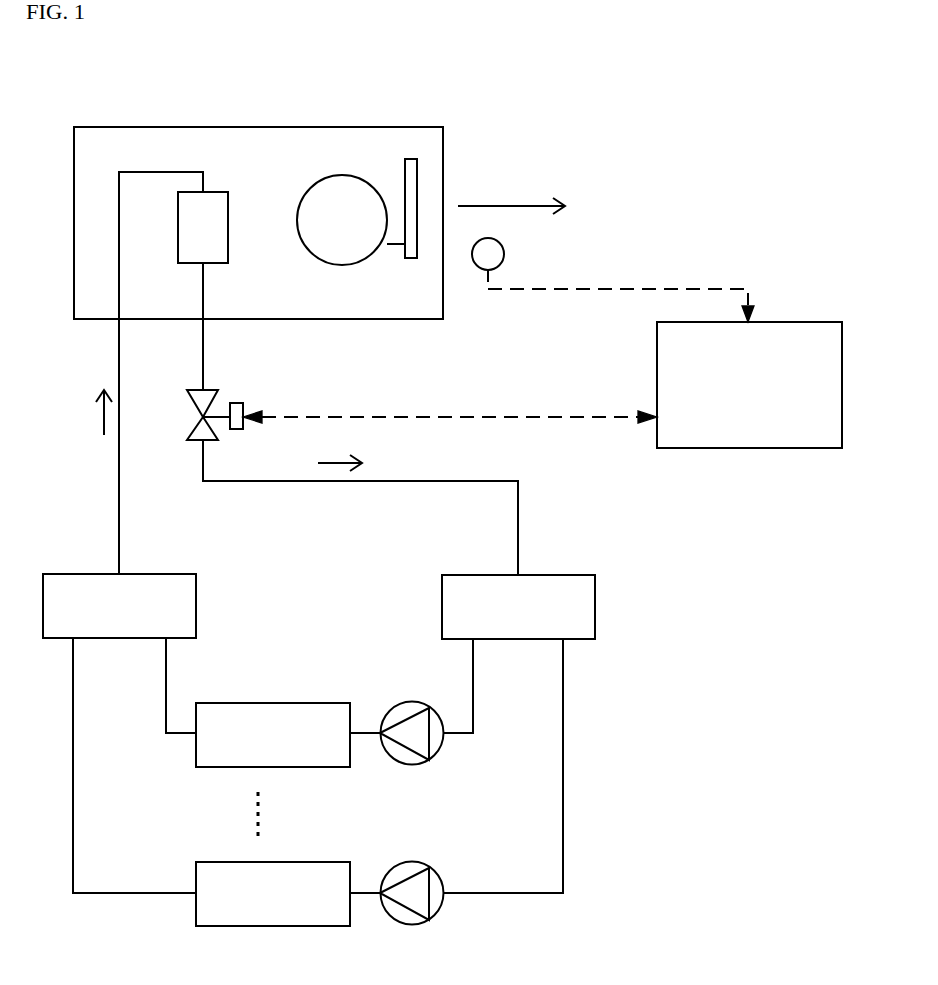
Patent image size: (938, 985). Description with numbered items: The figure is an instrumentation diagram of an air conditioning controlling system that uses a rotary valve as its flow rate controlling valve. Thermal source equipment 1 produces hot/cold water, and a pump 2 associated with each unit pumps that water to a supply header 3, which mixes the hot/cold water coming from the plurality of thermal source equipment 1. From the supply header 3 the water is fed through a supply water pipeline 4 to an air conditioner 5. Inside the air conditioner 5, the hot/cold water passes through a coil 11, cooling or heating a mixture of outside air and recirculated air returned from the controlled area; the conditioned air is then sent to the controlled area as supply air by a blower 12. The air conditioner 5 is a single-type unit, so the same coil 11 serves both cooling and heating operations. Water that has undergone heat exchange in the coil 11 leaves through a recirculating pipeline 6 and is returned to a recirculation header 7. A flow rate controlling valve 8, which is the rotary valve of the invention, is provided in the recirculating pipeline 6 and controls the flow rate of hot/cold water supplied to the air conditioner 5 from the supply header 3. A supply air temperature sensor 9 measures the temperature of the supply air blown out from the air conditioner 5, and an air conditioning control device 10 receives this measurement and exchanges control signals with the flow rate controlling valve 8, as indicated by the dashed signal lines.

The thermal source equipment 1 is at (302, 767).
The pump 2 is at (413, 768).
The supply header 3 is at (167, 573).
The supply water pipeline 4 is at (122, 340).
The air conditioner 5 is at (228, 126).
The recirculating pipeline 6 is at (204, 340).
The recirculation header 7 is at (560, 573).
The flow rate controlling valve 8 is at (195, 442).
The supply air temperature sensor 9 is at (483, 273).
The air conditioning control device 10 is at (787, 322).
The coil 11 is at (188, 263).
The blower 12 is at (308, 250).